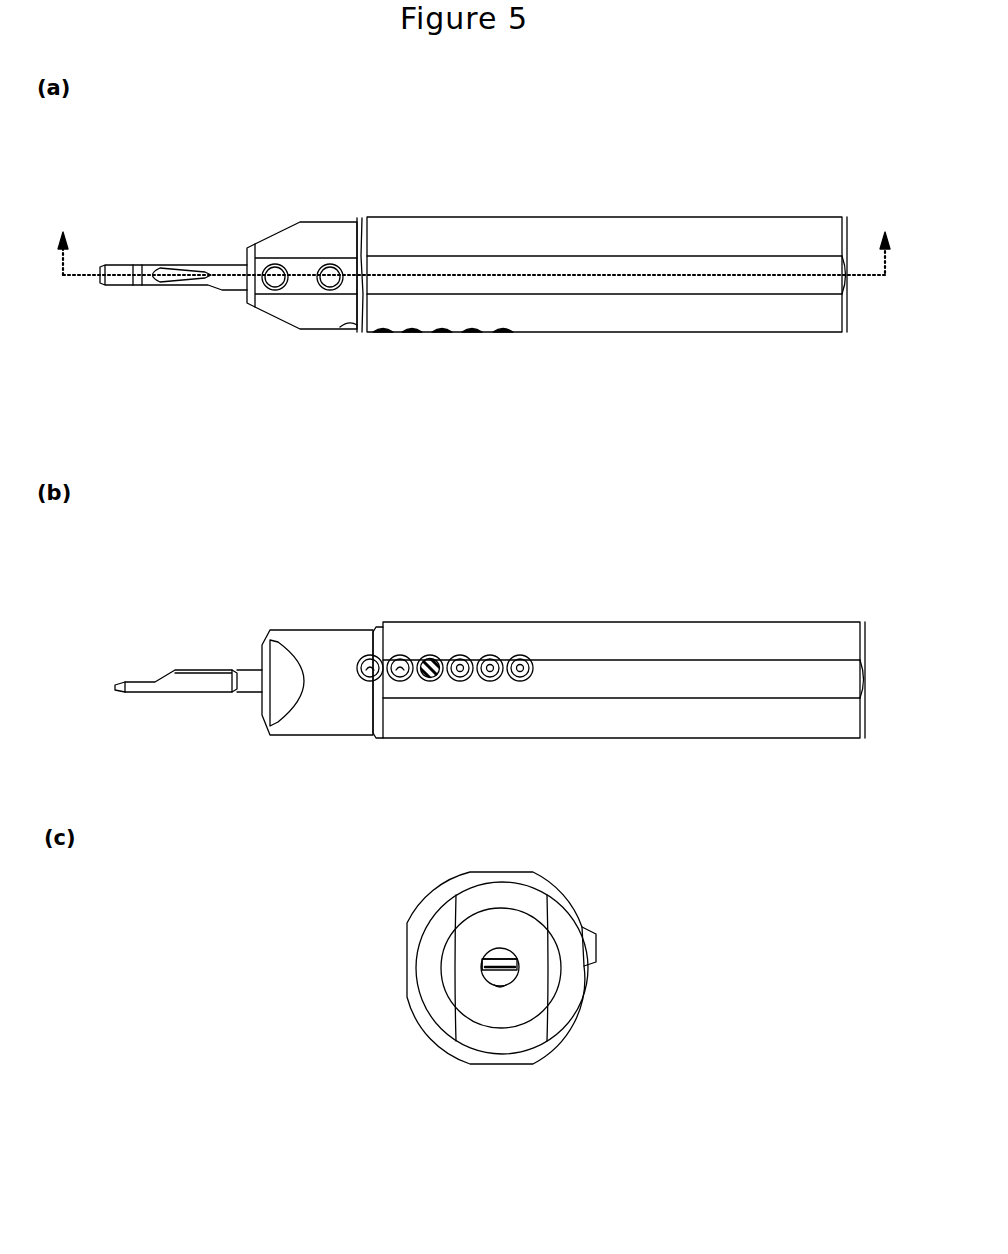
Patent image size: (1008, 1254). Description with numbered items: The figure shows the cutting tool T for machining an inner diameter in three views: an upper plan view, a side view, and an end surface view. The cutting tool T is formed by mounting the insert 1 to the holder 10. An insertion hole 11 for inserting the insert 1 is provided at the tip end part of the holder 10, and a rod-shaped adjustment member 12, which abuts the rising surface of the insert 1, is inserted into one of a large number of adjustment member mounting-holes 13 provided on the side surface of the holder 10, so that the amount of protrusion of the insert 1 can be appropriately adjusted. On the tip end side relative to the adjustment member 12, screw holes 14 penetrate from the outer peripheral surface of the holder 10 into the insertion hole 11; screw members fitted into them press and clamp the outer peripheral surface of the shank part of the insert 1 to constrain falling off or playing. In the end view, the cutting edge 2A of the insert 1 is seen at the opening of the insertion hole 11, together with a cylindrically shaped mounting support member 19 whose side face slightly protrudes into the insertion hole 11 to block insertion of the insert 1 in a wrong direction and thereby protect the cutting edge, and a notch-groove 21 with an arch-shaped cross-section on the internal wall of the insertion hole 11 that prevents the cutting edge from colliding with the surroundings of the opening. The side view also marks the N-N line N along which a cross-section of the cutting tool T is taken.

The insert 1 is at (171, 258).
The cutting edge 2A is at (118, 681).
The holder 10 is at (402, 213).
The insertion hole 11 is at (485, 958).
The adjustment member 12 is at (432, 677).
The adjustment member mounting-holes 13 is at (352, 620).
The screw holes 14 is at (330, 283).
The mounting support member 19 is at (500, 987).
The notch-groove 21 is at (478, 965).
The cutting tool T is at (668, 179).
The N-N line N is at (474, 235).